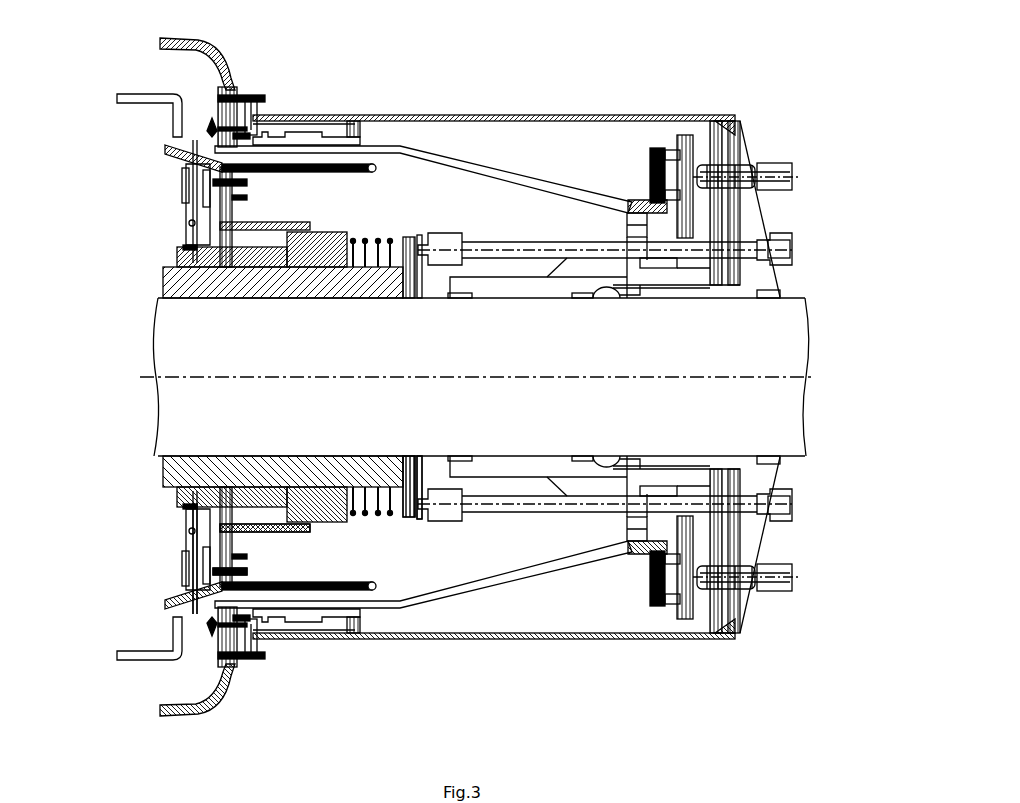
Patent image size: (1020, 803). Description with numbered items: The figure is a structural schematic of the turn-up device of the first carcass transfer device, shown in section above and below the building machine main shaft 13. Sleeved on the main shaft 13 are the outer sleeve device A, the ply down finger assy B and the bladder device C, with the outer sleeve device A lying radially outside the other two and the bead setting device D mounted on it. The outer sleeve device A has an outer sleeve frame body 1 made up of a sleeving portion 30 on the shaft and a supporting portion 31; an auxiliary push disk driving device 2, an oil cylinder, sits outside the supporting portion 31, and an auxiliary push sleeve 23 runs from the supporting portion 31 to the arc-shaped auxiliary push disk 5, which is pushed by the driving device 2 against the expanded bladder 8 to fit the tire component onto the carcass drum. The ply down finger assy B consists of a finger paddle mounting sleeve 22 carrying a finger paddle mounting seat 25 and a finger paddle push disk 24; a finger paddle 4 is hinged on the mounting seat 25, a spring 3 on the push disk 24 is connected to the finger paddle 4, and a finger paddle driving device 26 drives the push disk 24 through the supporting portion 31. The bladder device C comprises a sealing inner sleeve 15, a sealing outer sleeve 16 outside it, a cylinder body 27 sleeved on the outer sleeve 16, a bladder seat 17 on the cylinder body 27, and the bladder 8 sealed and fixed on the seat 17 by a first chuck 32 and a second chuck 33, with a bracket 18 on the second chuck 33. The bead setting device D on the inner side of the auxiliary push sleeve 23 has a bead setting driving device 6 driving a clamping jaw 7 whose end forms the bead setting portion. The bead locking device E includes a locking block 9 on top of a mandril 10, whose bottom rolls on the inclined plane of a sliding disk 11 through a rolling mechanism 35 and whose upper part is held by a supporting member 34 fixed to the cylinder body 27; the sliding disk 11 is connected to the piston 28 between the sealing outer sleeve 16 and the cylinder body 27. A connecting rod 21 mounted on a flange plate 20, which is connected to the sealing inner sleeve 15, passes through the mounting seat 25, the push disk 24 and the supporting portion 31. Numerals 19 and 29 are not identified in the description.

The outer sleeve frame body 1 is at (732, 230).
The auxiliary push disk driving device 2 is at (772, 170).
The spring 3 is at (658, 150).
The finger paddle 4 is at (485, 170).
The auxiliary push disk 5 is at (222, 73).
The bead setting driving device 6 is at (307, 138).
The clamping jaw 7 is at (207, 128).
The bladder 8 is at (196, 147).
The locking block 9 is at (180, 162).
The mandril 10 is at (192, 207).
The sliding disk 11 is at (205, 237).
The building machine main shaft 13 is at (212, 337).
The sealing inner sleeve 15 is at (185, 473).
The sealing outer sleeve 16 is at (210, 493).
The bladder seat 17 is at (217, 568).
The bracket 18 is at (185, 615).
The L-shaped bracket 19 is at (147, 657).
The flange plate 20 is at (410, 515).
The connecting rod 21 is at (500, 503).
The finger paddle mounting sleeve 22 is at (567, 463).
The auxiliary push sleeve 23 is at (580, 632).
The finger paddle push disk 24 is at (683, 578).
The finger paddle mounting seat 25 is at (628, 525).
The finger paddle driving device 26 is at (730, 483).
The cylinder body 27 is at (203, 528).
The piston 28 is at (178, 268).
The flange 29 is at (303, 517).
The sleeving portion 30 is at (683, 293).
The supporting portion 31 is at (750, 277).
The first chuck 32 is at (217, 574).
The second chuck 33 is at (220, 590).
The supporting member 34 is at (183, 185).
The rolling mechanism 35 is at (213, 225).
The outer sleeve device A is at (447, 117).
The ply down finger assy B is at (633, 200).
The bladder device C is at (270, 163).
The bead setting device D is at (258, 100).
The bead locking device E is at (190, 155).